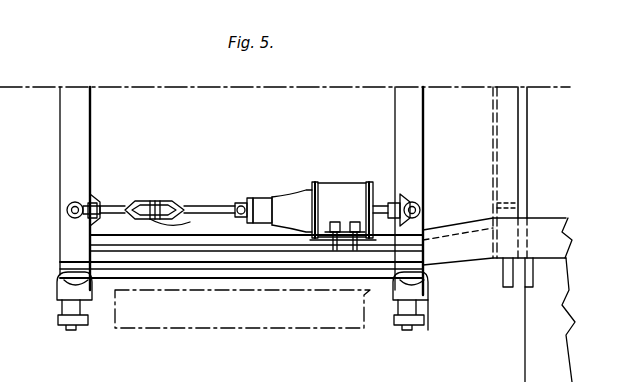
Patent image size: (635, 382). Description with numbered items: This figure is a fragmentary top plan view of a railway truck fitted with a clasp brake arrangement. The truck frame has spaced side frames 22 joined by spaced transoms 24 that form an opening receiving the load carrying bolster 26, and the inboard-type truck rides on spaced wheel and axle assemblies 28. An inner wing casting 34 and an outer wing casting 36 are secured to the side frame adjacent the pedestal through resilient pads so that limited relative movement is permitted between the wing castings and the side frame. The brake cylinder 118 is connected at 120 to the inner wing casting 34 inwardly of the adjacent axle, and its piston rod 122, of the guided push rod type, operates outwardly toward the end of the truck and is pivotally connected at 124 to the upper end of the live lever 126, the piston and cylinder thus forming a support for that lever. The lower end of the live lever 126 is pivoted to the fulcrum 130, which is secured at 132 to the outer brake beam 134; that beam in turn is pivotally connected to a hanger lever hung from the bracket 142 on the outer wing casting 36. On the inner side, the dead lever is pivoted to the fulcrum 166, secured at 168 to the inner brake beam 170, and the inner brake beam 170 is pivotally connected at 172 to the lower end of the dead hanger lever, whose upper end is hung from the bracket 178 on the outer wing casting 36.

The side frame 22 is at (463, 259).
The transom 24 is at (512, 142).
The bolster 26 is at (565, 346).
The wheel and axle assembly 28 is at (233, 328).
The inner wing casting 34 is at (100, 236).
The outer wing casting 36 is at (108, 268).
The brake cylinder 118 is at (340, 185).
The connection of brake cylinder to inner wing casting 120 is at (343, 222).
The piston rod 122 is at (262, 192).
The pivotal connection of piston rod to live lever 124 is at (207, 206).
The live lever 126 is at (160, 200).
The fulcrum 130 is at (111, 206).
The securing connection of fulcrum to outer brake beam 132 is at (68, 206).
The outer brake beam 134 is at (66, 126).
The bracket 142 is at (62, 325).
The fulcrum 166 is at (380, 200).
The securing connection of fulcrum to inner brake beam 168 is at (420, 206).
The inner brake beam 170 is at (423, 133).
The pivotal connection of inner brake beam to dead hanger lever 172 is at (398, 312).
The bracket 178 is at (430, 325).